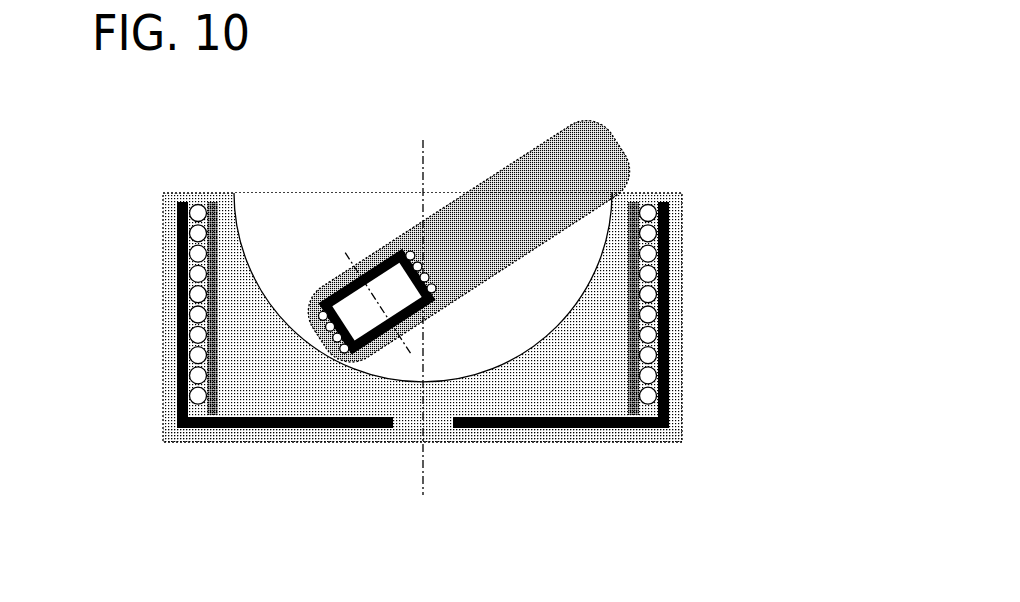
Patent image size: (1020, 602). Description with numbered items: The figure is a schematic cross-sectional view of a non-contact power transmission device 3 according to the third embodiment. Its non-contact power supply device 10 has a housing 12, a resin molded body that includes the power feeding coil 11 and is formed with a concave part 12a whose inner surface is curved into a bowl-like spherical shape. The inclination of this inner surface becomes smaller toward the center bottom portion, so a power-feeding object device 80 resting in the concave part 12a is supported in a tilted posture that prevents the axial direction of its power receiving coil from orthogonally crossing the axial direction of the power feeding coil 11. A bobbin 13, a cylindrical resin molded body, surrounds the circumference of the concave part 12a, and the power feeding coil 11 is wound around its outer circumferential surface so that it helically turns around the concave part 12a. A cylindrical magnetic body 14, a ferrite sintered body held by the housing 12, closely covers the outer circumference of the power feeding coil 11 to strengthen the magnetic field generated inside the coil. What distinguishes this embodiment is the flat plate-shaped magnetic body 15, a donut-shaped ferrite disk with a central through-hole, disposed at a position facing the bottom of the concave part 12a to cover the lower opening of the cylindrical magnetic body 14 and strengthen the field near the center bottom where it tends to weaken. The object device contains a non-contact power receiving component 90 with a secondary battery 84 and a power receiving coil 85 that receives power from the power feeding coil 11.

The non-contact power transmission device 3 is at (530, 337).
The non-contact power supply device 10 is at (498, 307).
The power feeding coil 11 is at (668, 335).
The housing 12 is at (682, 217).
The concave part 12a is at (240, 245).
The bobbin 13 is at (615, 428).
The cylindrical magnetic body 14 is at (668, 400).
The flat plate-shaped magnetic body 15 is at (523, 428).
The power receiving device 80 is at (513, 315).
The secondary battery 84 is at (372, 367).
The power receiving coil 85 is at (330, 347).
The non-contact power receiving component 90 is at (347, 258).